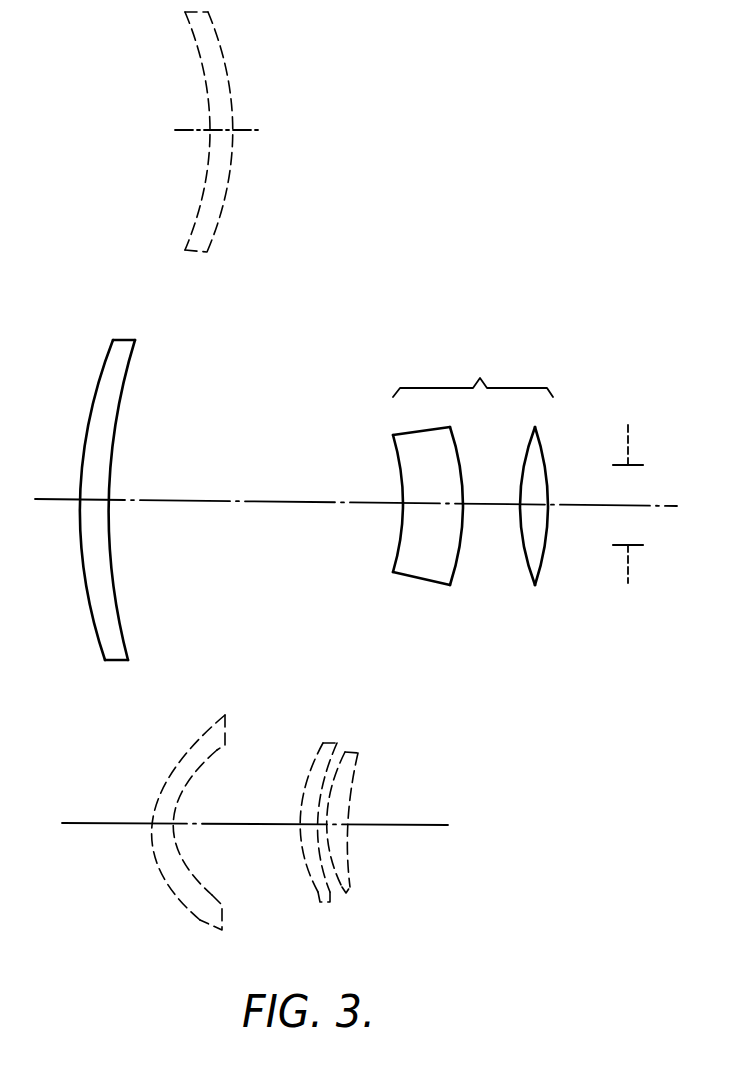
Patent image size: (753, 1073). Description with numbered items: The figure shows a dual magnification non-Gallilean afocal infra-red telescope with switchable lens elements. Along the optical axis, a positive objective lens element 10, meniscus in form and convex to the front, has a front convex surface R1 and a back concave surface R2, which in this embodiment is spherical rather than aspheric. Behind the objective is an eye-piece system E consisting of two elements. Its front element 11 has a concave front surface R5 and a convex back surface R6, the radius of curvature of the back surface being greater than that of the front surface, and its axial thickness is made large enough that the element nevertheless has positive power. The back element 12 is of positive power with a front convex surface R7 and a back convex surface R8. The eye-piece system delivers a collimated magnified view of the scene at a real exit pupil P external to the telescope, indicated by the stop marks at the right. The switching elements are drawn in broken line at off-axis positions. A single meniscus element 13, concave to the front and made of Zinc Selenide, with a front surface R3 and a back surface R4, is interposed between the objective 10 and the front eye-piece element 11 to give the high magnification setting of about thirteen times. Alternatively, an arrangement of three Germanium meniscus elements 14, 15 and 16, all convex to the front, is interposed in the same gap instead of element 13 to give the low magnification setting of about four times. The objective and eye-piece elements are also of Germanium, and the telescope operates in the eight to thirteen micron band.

The positive objective lens element 10 is at (103, 523).
The front element of eye-piece system 11 is at (424, 522).
The back element of eye-piece system 12 is at (536, 522).
The single meniscus switching element 13 is at (219, 146).
The meniscus switching element 14 is at (166, 838).
The meniscus switching element 15 is at (319, 823).
The meniscus switching element 16 is at (376, 857).
The front convex surface R1 is at (80, 429).
The back concave surface R2 is at (109, 438).
The front surface of switching element R3 is at (202, 64).
The back surface of switching element R4 is at (234, 115).
The concave front surface R5 is at (400, 453).
The convex back surface R6 is at (461, 455).
The front convex surface R7 is at (520, 522).
The back convex surface R8 is at (548, 478).
The eye-piece system E is at (473, 376).
The exit pupil position P is at (633, 504).